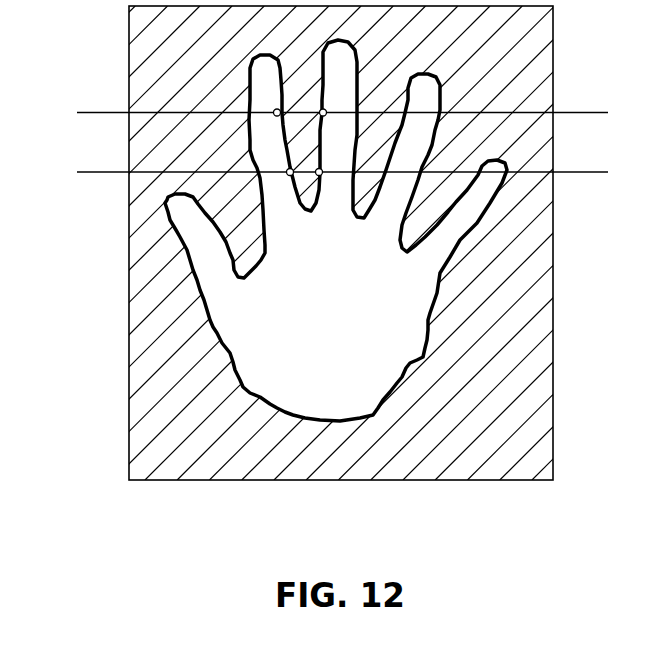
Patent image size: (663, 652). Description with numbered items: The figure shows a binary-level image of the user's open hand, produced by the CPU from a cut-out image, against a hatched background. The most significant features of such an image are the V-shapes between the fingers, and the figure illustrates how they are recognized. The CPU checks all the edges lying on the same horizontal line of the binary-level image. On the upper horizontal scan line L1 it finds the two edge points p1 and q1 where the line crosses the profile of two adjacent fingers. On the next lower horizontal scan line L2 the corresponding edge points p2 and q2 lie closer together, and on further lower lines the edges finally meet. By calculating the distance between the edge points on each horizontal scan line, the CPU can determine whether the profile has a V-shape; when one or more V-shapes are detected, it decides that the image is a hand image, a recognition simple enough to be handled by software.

The horizontal scan line L1 is at (322, 114).
The horizontal scan line L2 is at (322, 174).
The edge point p1 is at (274, 127).
The edge point q1 is at (336, 127).
The edge point p2 is at (286, 190).
The edge point q2 is at (333, 190).